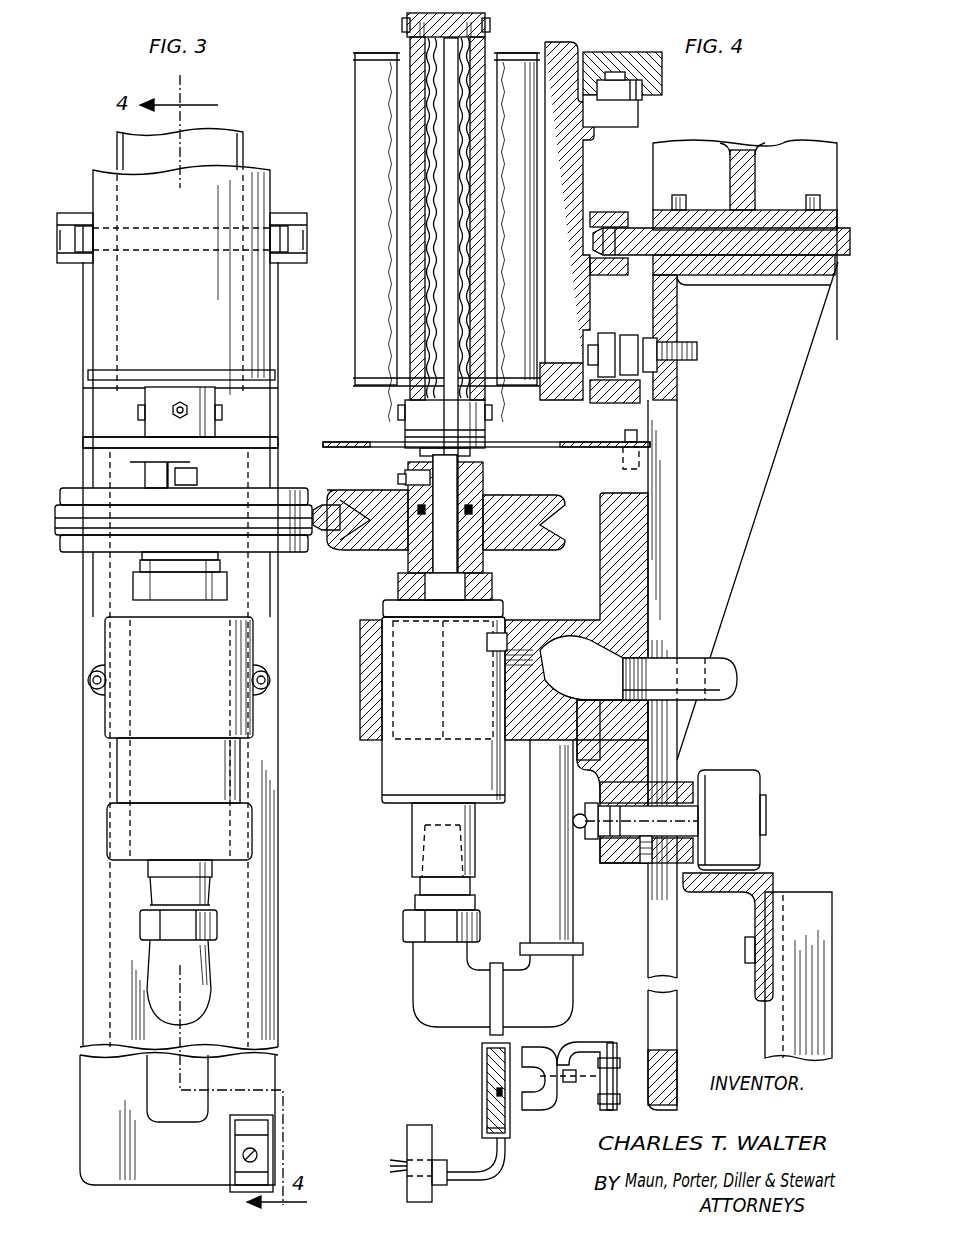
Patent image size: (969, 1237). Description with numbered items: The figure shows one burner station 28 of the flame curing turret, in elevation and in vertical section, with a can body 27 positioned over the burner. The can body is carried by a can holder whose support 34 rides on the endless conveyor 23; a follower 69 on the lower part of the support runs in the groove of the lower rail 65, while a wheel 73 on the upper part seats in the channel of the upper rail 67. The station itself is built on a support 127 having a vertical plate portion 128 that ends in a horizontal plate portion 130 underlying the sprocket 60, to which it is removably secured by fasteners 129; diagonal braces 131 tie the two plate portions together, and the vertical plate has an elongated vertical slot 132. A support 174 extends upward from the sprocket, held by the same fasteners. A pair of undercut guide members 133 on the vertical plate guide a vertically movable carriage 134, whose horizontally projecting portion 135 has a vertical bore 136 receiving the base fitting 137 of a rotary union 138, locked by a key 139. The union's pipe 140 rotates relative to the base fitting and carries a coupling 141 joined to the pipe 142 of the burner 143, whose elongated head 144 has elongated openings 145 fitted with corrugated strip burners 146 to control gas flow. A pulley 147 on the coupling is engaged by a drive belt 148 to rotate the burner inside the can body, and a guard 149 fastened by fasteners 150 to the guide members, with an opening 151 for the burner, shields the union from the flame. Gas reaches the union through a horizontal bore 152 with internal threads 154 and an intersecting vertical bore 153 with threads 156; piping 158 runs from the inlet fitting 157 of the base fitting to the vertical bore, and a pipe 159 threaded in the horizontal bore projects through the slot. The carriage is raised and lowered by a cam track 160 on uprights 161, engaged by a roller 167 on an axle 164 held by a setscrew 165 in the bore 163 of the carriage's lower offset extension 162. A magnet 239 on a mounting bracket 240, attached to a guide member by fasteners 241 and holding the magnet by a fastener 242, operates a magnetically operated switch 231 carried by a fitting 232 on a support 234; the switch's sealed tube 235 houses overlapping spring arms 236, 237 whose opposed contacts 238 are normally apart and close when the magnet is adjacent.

In FIG. 3, the endless conveyor 23 is at (290, 218).
In FIG. 4, the endless conveyor 23 is at (606, 218).
In FIG. 3, the can body 27 is at (270, 355).
In FIG. 4, the can body 27 is at (360, 300).
In FIG. 4, the burner station 28 is at (627, 170).
In FIG. 4, the support 34 is at (586, 167).
In FIG. 4, the sprocket 60 is at (644, 256).
In FIG. 4, the rail 65 is at (600, 405).
In FIG. 4, the rail 67 is at (640, 52).
In FIG. 4, the follower 69 is at (607, 334).
In FIG. 4, the wheel 73 is at (640, 95).
In FIG. 4, the support 127 is at (716, 602).
In FIG. 3, the vertical plate portion 128 is at (125, 1168).
In FIG. 4, the vertical plate portion 128 is at (677, 305).
In FIG. 4, the fasteners 129 is at (680, 196).
In FIG. 4, the horizontal plate portion 130 is at (770, 276).
In FIG. 4, the diagonal braces 131 is at (762, 478).
In FIG. 3, the vertical slot 132 is at (190, 1122).
In FIG. 4, the vertical slot 132 is at (677, 462).
In FIG. 3, the guide members 133 is at (268, 890).
In FIG. 4, the guide members 133 is at (658, 960).
In FIG. 3, the carriage 134 is at (252, 826).
In FIG. 4, the carriage 134 is at (600, 572).
In FIG. 3, the horizontally projecting portion 135 is at (253, 640).
In FIG. 4, the horizontally projecting portion 135 is at (360, 728).
In FIG. 4, the vertical bore 136 is at (382, 760).
In FIG. 3, the base fitting 137 is at (240, 770).
In FIG. 4, the base fitting 137 is at (385, 802).
In FIG. 3, the rotary union 138 is at (230, 590).
In FIG. 4, the rotary union 138 is at (398, 590).
In FIG. 4, the key 139 is at (490, 651).
In FIG. 4, the pipe 140 is at (463, 580).
In FIG. 3, the coupling 141 is at (150, 468).
In FIG. 4, the coupling 141 is at (481, 487).
In FIG. 4, the pipe 142 is at (418, 458).
In FIG. 3, the burner 143 is at (224, 398).
In FIG. 4, the burner 143 is at (398, 401).
In FIG. 4, the elongated head 144 is at (487, 33).
In FIG. 4, the elongated openings 145 is at (425, 220).
In FIG. 4, the corrugated strip burners 146 is at (425, 140).
In FIG. 3, the pulley 147 is at (290, 488).
In FIG. 4, the pulley 147 is at (545, 530).
In FIG. 3, the drive belt 148 is at (106, 532).
In FIG. 4, the drive belt 148 is at (322, 532).
In FIG. 3, the guard 149 is at (207, 420).
In FIG. 4, the guard 149 is at (552, 442).
In FIG. 4, the fasteners 150 is at (640, 434).
In FIG. 4, the opening 151 is at (508, 442).
In FIG. 4, the horizontal bore 152 is at (598, 657).
In FIG. 4, the vertical bore 153 is at (605, 718).
In FIG. 4, the internal threads 154 is at (612, 781).
In FIG. 4, the threads 156 is at (555, 712).
In FIG. 3, the inlet fitting 157 is at (190, 830).
In FIG. 4, the inlet fitting 157 is at (412, 855).
In FIG. 3, the piping 158 is at (200, 1004).
In FIG. 4, the piping 158 is at (413, 1000).
In FIG. 4, the pipe 159 is at (725, 696).
In FIG. 4, the cam track 160 is at (775, 882).
In FIG. 4, the uprights 161 is at (770, 1045).
In FIG. 4, the lower offset extension 162 is at (622, 870).
In FIG. 4, the bore 163 is at (646, 813).
In FIG. 4, the axle 164 is at (658, 836).
In FIG. 4, the setscrew 165 is at (646, 866).
In FIG. 4, the roller 167 is at (755, 792).
In FIG. 4, the support 174 is at (760, 153).
In FIG. 4, the magnetically operated switch 231 is at (483, 1105).
In FIG. 4, the fitting 232 is at (470, 1174).
In FIG. 4, the support 234 is at (410, 1185).
In FIG. 4, the sealed tube 235 is at (482, 1068).
In FIG. 4, the spring arm 236 is at (500, 1052).
In FIG. 4, the spring arm 237 is at (506, 1131).
In FIG. 4, the contacts 238 is at (495, 1092).
In FIG. 3, the magnet 239 is at (236, 1182).
In FIG. 4, the magnet 239 is at (546, 1120).
In FIG. 3, the mounting bracket 240 is at (272, 1118).
In FIG. 4, the mounting bracket 240 is at (592, 1042).
In FIG. 4, the fasteners 241 is at (610, 1060).
In FIG. 3, the fastener 242 is at (258, 1155).
In FIG. 4, the fastener 242 is at (571, 1085).